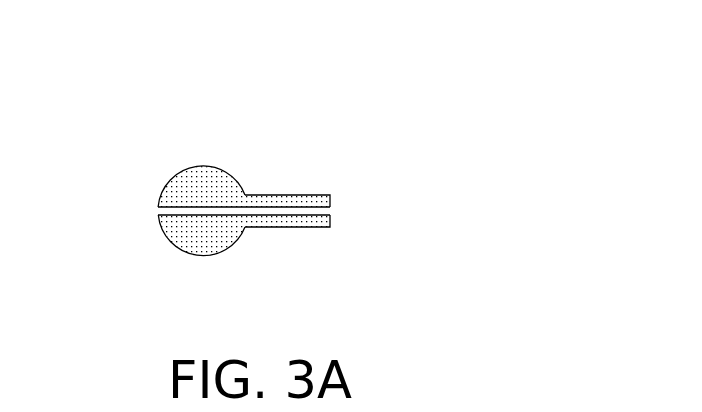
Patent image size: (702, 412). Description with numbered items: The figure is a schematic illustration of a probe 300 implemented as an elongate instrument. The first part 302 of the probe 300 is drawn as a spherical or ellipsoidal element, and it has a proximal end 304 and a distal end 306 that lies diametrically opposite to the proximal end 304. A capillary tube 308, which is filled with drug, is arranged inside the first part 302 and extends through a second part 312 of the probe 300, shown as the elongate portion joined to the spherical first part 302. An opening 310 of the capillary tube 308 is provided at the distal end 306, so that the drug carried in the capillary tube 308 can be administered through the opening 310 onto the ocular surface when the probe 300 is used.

The probe 300 is at (309, 158).
The first part 302 is at (190, 179).
The proximal end 304 is at (336, 214).
The distal end 306 is at (161, 193).
The capillary tube 308 is at (216, 207).
The opening 310 is at (158, 211).
The second part 312 is at (315, 195).